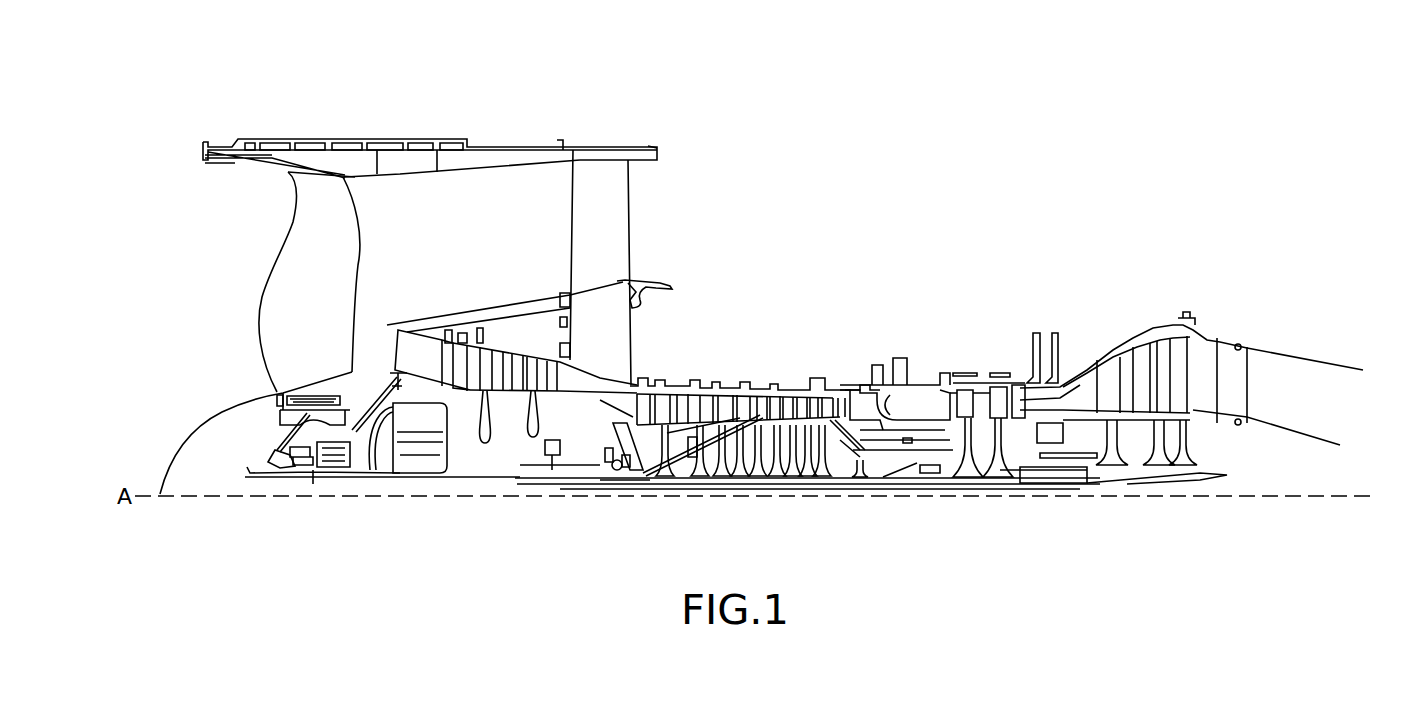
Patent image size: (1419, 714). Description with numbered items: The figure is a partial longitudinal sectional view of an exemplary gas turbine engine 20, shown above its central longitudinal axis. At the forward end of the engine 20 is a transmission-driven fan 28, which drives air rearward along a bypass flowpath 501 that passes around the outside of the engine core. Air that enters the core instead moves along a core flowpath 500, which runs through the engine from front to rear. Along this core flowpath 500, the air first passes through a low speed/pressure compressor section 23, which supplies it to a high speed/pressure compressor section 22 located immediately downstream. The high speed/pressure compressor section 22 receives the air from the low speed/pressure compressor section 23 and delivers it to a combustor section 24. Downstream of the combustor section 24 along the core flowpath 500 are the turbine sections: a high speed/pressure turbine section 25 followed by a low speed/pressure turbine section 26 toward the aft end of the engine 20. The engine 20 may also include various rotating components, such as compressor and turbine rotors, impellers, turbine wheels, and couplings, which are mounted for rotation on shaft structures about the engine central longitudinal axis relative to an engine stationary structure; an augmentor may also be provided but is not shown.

The gas turbine engine 20 is at (1068, 140).
The high speed/pressure compressor section 22 is at (675, 388).
The low speed/pressure compressor section 23 is at (512, 342).
The combustor section 24 is at (918, 399).
The high speed/pressure turbine section 25 is at (993, 380).
The low speed/pressure turbine section 26 is at (1192, 370).
The transmission-driven fan 28 is at (312, 332).
The core flowpath 500 is at (420, 355).
The bypass flowpath 501 is at (500, 211).